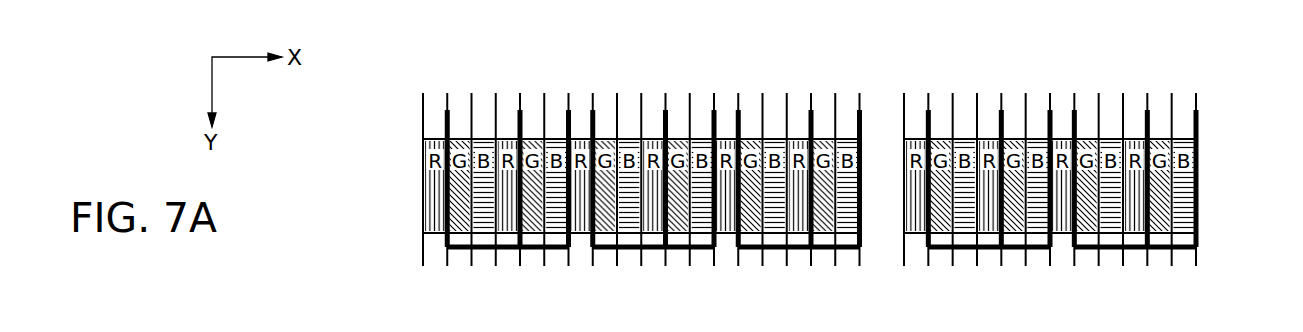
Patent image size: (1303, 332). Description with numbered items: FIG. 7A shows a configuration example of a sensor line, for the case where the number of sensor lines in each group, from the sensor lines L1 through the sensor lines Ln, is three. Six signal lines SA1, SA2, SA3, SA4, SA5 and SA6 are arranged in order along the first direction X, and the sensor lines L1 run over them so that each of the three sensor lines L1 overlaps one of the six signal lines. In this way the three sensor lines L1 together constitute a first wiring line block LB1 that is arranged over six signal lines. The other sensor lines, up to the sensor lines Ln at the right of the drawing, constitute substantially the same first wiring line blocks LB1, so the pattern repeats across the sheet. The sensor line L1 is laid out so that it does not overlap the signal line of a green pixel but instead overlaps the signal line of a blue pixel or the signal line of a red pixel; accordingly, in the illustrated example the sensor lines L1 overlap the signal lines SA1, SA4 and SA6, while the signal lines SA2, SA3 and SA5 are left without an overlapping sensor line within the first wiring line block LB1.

The signal line SA1 is at (447, 103).
The signal line SA2 is at (471, 105).
The signal line SA3 is at (495, 105).
The signal line SA4 is at (519, 105).
The signal line SA5 is at (544, 105).
The signal line SA6 is at (568, 105).
The sensor line L1 is at (443, 219).
The sensor line Ln is at (1198, 223).
The first wiring line block LB1 is at (1074, 247).